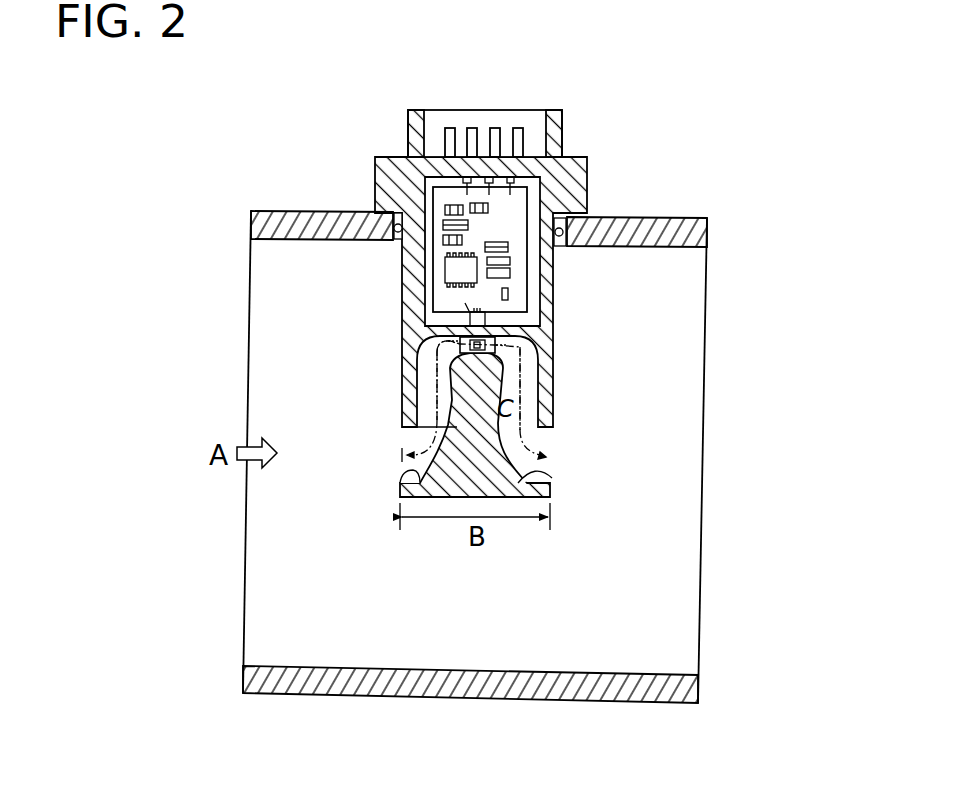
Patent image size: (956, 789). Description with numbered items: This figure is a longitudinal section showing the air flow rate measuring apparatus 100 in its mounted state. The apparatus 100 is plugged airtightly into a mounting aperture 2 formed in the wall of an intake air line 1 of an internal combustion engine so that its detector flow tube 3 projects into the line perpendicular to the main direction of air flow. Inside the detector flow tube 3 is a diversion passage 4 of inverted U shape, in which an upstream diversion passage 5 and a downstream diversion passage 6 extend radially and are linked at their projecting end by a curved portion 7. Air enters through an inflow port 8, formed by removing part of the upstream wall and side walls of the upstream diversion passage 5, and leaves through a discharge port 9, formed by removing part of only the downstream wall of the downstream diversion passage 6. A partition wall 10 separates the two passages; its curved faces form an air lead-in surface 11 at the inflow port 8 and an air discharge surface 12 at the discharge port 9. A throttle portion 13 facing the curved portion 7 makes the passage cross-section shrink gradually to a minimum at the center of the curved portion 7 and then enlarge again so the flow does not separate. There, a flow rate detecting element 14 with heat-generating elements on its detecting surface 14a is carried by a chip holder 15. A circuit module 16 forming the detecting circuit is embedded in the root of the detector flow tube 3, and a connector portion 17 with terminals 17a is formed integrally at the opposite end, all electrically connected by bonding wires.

The intake air line 1 is at (685, 211).
The mounting aperture 2 is at (395, 215).
The detector flow tube 3 is at (393, 282).
The diversion passage 4 is at (427, 395).
The upstream diversion passage 5 is at (422, 380).
The downstream diversion passage 6 is at (532, 382).
The curved portion 7 is at (403, 320).
The inflow port 8 is at (413, 440).
The discharge port 9 is at (543, 440).
The partition wall 10 is at (449, 490).
The air lead-in surface 11 is at (407, 473).
The air discharge surface 12 is at (537, 473).
The throttle portion 13 is at (460, 343).
The flow rate detecting element 14 is at (553, 351).
The detecting surface 14a is at (503, 330).
The chip holder 15 is at (497, 350).
The circuit module 16 is at (520, 197).
The connector portion 17 is at (478, 120).
The terminals 17a is at (445, 136).
The air flow rate measuring apparatus 100 is at (358, 152).